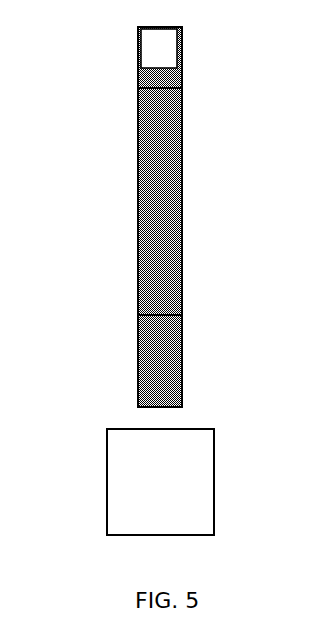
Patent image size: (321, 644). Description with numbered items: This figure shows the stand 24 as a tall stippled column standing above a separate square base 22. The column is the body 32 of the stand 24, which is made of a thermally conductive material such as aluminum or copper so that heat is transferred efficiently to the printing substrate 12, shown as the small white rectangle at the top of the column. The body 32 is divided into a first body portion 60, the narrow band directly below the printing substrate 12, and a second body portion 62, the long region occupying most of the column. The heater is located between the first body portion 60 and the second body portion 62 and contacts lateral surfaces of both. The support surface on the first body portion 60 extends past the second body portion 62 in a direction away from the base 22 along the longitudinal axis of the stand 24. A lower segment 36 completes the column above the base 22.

The printing substrate 12 is at (152, 52).
The first body portion 60 is at (148, 82).
The second body portion 62 is at (160, 202).
The body 32 is at (139, 183).
The stand 24 is at (139, 237).
The lower layer segment 36 is at (162, 370).
The base 22 is at (195, 482).